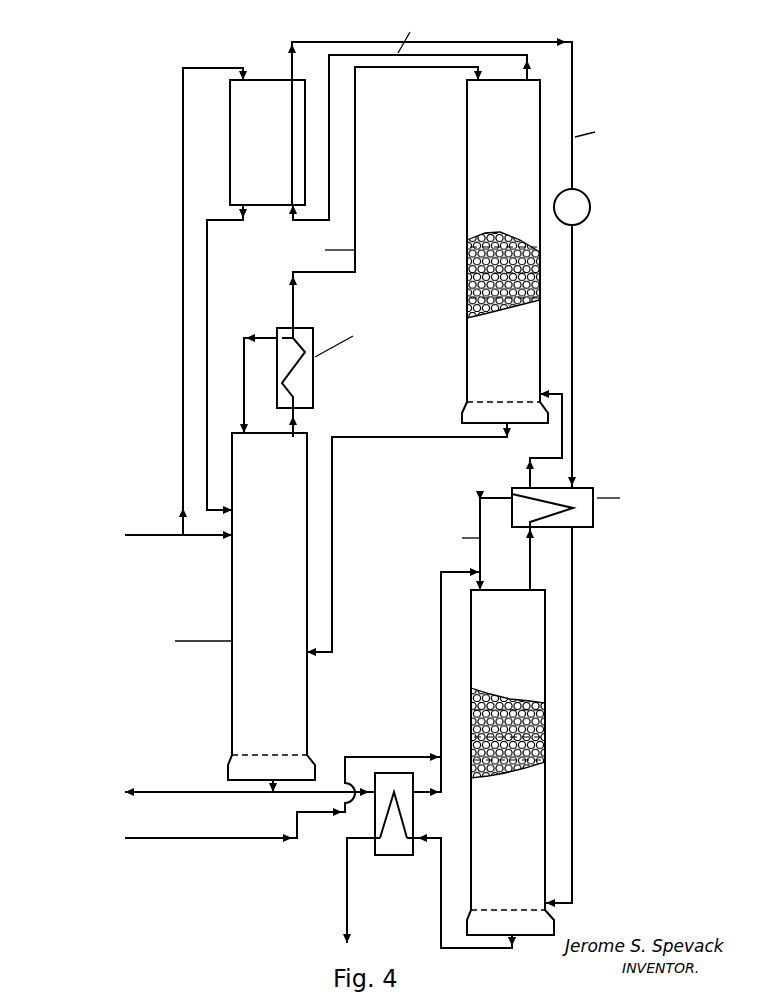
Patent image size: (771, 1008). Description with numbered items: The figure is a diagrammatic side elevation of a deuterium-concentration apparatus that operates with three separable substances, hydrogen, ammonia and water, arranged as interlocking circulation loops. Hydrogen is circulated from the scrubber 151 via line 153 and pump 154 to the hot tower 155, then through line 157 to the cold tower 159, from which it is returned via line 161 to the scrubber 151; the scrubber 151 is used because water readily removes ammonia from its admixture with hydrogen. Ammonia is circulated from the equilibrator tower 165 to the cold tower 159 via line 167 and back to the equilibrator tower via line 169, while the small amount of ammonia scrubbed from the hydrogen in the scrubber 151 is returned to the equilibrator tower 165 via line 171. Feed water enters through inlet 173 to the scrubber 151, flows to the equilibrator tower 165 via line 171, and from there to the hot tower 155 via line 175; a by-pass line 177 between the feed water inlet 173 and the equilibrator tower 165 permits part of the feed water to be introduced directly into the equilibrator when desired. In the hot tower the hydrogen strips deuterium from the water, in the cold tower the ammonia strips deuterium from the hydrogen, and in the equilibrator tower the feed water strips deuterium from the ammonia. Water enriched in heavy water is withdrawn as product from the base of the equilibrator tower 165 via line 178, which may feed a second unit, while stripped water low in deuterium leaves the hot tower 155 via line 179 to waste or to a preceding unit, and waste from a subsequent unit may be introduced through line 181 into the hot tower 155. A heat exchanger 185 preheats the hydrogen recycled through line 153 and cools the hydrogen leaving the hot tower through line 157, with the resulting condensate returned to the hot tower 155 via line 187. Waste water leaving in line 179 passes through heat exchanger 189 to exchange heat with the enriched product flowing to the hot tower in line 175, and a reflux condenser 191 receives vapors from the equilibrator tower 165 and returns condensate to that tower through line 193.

The scrubber 151 is at (240, 99).
The line 153 is at (322, 40).
The pump 154 is at (586, 197).
The hot tower 155 is at (553, 630).
The line 157 is at (527, 467).
The cold tower 159 is at (483, 175).
The line 161 is at (330, 108).
The equilibrator tower 165 is at (255, 594).
The line 167 is at (357, 263).
The line 169 is at (358, 440).
The line 171 is at (210, 287).
The feed water inlet 173 is at (183, 298).
The line 175 is at (393, 714).
The by-pass line 177 is at (193, 537).
The line 178 is at (195, 795).
The line 179 is at (346, 906).
The line 181 is at (192, 840).
The heat exchanger 185 is at (575, 497).
The line 187 is at (492, 498).
The heat exchanger 189 is at (407, 822).
The reflux condenser 191 is at (307, 375).
The line 193 is at (276, 309).